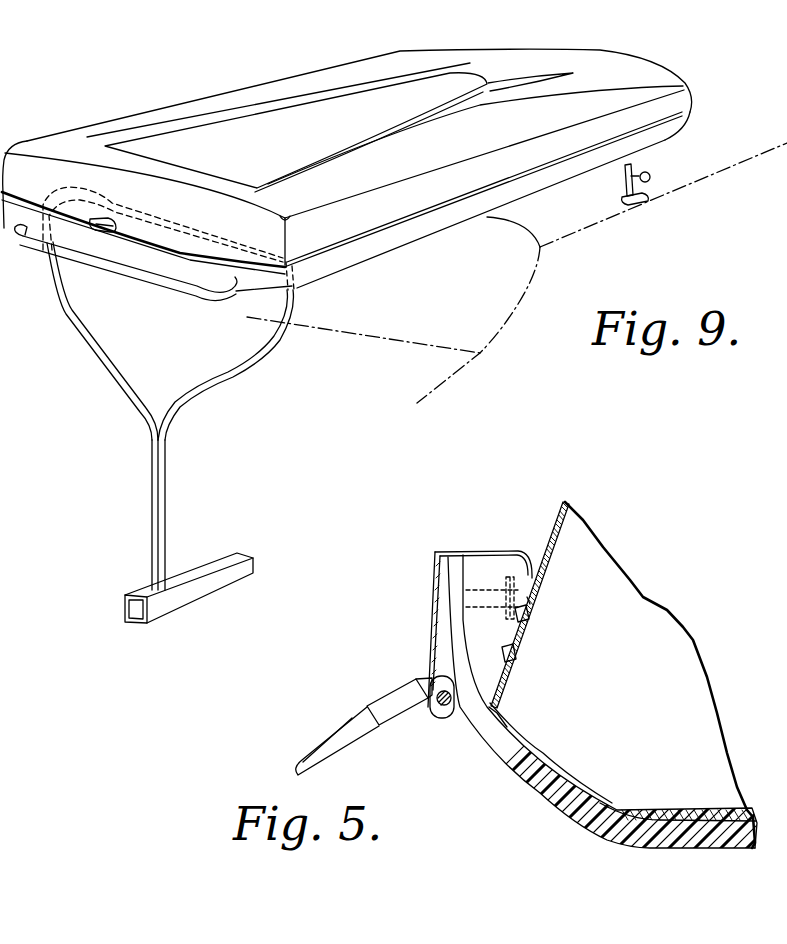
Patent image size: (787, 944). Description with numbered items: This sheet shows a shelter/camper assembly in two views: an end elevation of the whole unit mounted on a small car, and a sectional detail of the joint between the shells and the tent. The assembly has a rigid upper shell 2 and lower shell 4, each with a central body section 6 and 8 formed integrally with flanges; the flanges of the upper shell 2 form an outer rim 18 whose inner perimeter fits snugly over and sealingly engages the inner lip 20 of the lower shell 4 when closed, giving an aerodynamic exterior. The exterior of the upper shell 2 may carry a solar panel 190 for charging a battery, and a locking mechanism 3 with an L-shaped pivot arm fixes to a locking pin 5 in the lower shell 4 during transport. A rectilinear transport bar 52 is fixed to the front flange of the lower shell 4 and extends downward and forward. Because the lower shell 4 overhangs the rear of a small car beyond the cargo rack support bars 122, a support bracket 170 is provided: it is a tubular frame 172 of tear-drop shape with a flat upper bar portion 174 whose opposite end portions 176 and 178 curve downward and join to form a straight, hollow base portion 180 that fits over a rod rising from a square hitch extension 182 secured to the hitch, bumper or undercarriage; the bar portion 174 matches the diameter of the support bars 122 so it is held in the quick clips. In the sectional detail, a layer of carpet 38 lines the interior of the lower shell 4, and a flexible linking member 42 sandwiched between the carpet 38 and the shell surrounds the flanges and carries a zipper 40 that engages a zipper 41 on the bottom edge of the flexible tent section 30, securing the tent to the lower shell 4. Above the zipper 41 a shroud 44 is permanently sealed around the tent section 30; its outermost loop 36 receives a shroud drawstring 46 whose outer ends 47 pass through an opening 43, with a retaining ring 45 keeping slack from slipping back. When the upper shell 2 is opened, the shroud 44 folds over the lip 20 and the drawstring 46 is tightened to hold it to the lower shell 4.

In FIG. 9, the upper shell 2 is at (380, 157).
In FIG. 9, the lower shell 4 is at (667, 141).
In FIG. 5, the lower shell 4 is at (593, 700).
In FIG. 9, the central body section 6 is at (604, 68).
In FIG. 9, the outer rim 18 is at (688, 112).
In FIG. 9, the solar panel 190 is at (222, 132).
In FIG. 9, the locking mechanism 3 is at (98, 220).
In FIG. 9, the flat upper bar portion 174 is at (197, 230).
In FIG. 9, the central body section 8 is at (527, 195).
In FIG. 9, the support bar 122 is at (615, 174).
In FIG. 9, the transport bar 52 is at (24, 246).
In FIG. 9, the support bracket 170 is at (186, 432).
In FIG. 9, the tubular frame 172 is at (190, 408).
In FIG. 9, the end portion 176 is at (270, 360).
In FIG. 9, the end portion 178 is at (72, 310).
In FIG. 9, the base portion 180 is at (152, 514).
In FIG. 9, the square hitch extension 182 is at (243, 573).
In FIG. 5, the tent section 30 is at (563, 510).
In FIG. 5, the shroud 44 is at (493, 550).
In FIG. 5, the inner lip 20 is at (447, 651).
In FIG. 5, the locking pin 5 is at (493, 597).
In FIG. 5, the zipper 41 is at (530, 613).
In FIG. 5, the zipper 40 is at (515, 658).
In FIG. 5, the flexible linking member 42 is at (496, 690).
In FIG. 5, the opening 43 is at (427, 674).
In FIG. 5, the retaining ring 45 is at (345, 726).
In FIG. 5, the outer ends 47 is at (333, 742).
In FIG. 5, the shroud drawstring 46 is at (443, 720).
In FIG. 5, the outermost loop 36 is at (448, 722).
In FIG. 5, the carpet 38 is at (620, 807).